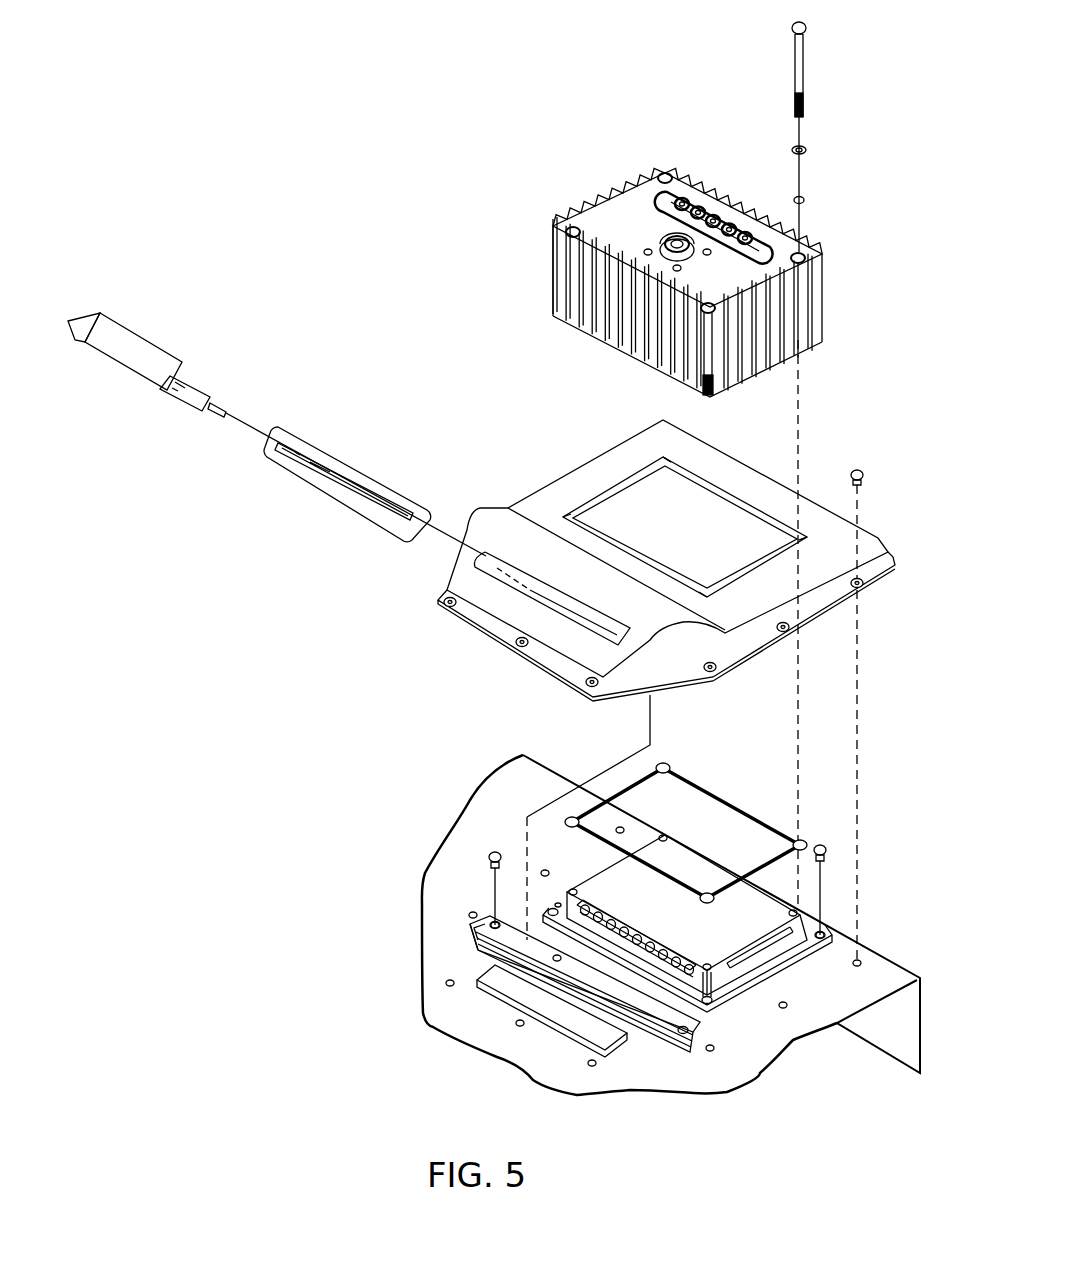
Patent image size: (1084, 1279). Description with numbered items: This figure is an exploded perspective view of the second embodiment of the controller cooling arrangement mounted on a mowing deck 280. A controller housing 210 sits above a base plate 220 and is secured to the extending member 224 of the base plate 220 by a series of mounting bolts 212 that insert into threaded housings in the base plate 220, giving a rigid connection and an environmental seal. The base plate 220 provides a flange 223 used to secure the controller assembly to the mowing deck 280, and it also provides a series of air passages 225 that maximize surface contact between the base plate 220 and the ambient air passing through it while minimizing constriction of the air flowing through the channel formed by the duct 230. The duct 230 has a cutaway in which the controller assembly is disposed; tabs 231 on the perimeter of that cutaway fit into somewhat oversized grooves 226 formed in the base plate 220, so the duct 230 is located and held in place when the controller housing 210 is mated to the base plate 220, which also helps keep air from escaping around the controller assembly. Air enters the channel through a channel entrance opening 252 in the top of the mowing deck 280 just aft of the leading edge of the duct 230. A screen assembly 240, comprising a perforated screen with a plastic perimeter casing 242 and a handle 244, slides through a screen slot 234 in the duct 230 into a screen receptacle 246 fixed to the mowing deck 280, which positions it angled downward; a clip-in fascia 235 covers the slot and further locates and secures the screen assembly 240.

The controller housing 210 is at (608, 225).
The mounting bolts 212 is at (803, 66).
The base plate 220 is at (765, 929).
The flange 223 is at (732, 988).
The extending member 224 is at (800, 933).
The air passages 225 is at (558, 903).
The grooves 226 is at (680, 957).
The duct 230 is at (595, 455).
The tabs 231 is at (608, 495).
The screen slot 234 is at (502, 558).
The clip-in fascia 235 is at (320, 447).
The screen assembly 240 is at (220, 325).
The perimeter casing 242 is at (217, 412).
The handle 244 is at (132, 342).
The screen receptacle 246 is at (660, 1038).
The channel entrance opening 252 is at (503, 993).
The mowing deck 280 is at (476, 891).